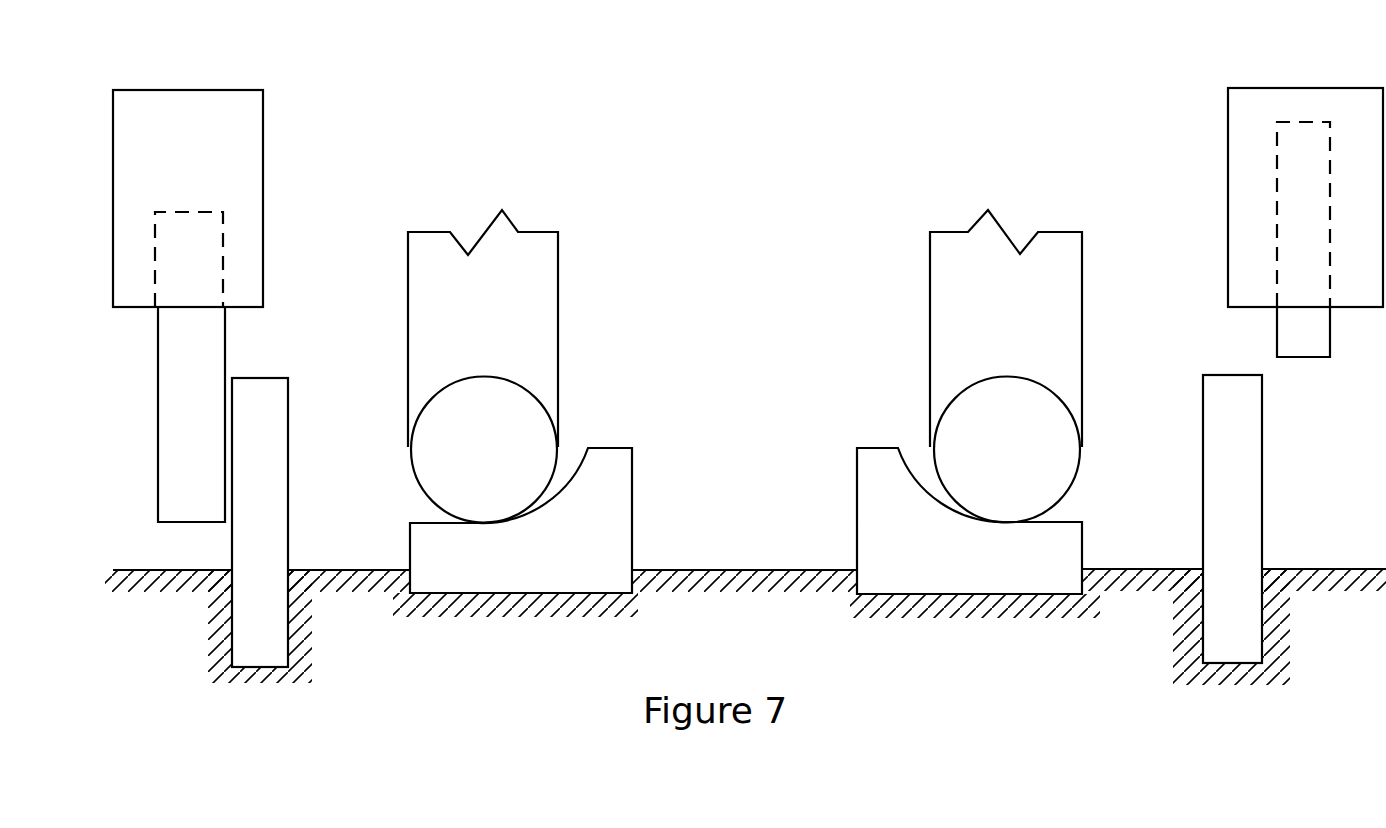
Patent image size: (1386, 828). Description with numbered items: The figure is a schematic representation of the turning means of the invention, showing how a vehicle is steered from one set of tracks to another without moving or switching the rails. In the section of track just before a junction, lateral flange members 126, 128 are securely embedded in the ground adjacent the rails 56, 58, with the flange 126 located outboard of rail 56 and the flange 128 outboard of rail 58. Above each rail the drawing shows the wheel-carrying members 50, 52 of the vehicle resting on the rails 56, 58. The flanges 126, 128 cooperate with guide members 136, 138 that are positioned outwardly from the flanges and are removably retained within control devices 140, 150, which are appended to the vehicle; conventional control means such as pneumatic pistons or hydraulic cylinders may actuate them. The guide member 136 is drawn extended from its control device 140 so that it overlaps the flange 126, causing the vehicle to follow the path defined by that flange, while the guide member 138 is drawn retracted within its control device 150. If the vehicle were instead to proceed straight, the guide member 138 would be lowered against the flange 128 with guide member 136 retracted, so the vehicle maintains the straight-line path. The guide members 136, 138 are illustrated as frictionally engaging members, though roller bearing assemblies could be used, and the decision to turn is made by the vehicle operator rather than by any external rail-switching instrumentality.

The control device 140 is at (240, 128).
The guide member 136 is at (175, 415).
The lateral flange member 126 is at (242, 549).
The first tool holder 50 is at (558, 265).
The rail 56 is at (562, 582).
The second tool holder 52 is at (930, 270).
The rail 58 is at (975, 582).
The control device 150 is at (1253, 145).
The guide member 138 is at (1295, 333).
The lateral flange member 128 is at (1240, 475).